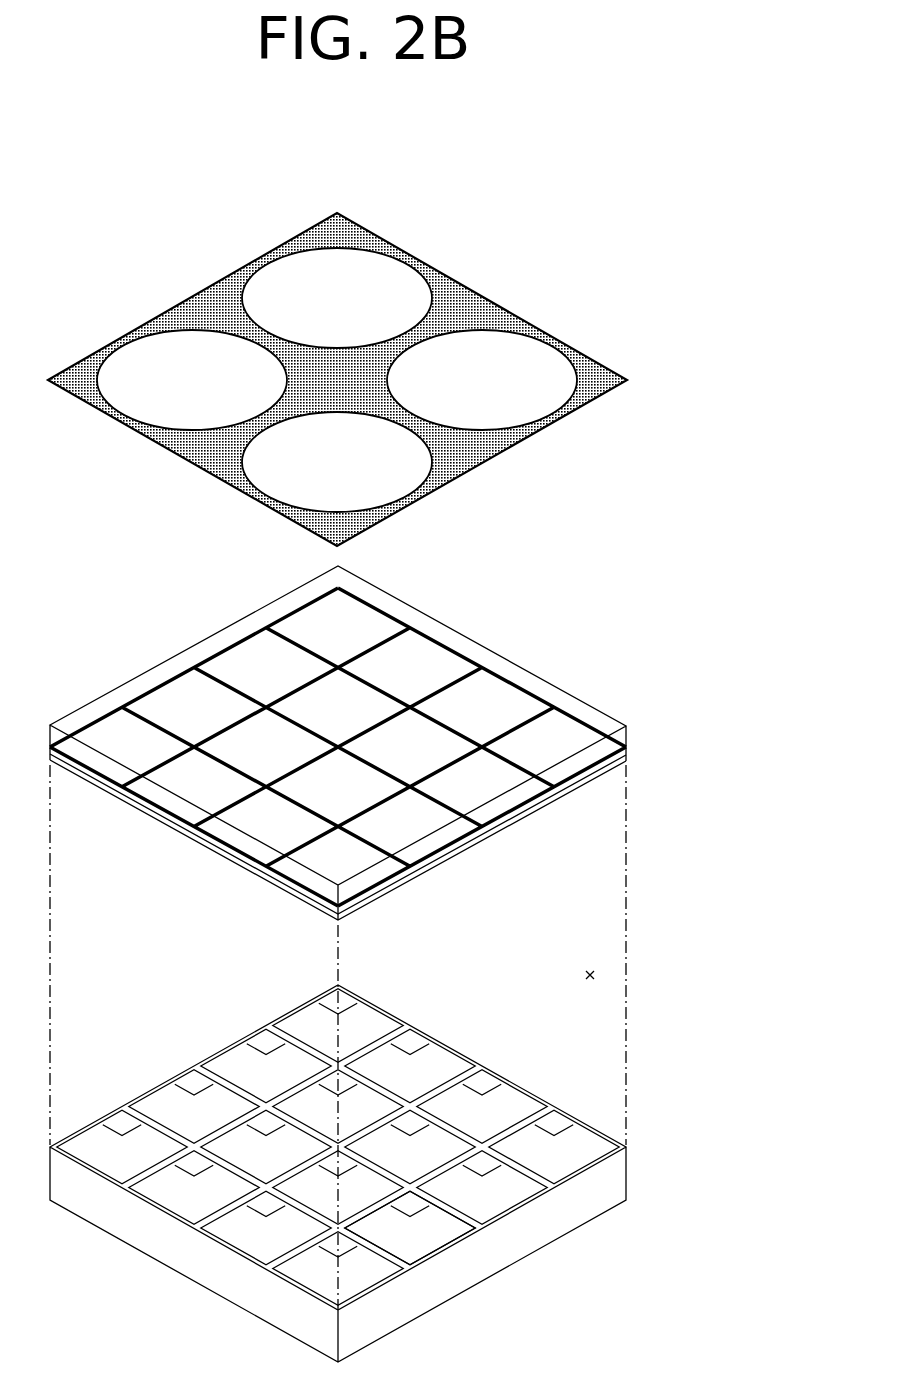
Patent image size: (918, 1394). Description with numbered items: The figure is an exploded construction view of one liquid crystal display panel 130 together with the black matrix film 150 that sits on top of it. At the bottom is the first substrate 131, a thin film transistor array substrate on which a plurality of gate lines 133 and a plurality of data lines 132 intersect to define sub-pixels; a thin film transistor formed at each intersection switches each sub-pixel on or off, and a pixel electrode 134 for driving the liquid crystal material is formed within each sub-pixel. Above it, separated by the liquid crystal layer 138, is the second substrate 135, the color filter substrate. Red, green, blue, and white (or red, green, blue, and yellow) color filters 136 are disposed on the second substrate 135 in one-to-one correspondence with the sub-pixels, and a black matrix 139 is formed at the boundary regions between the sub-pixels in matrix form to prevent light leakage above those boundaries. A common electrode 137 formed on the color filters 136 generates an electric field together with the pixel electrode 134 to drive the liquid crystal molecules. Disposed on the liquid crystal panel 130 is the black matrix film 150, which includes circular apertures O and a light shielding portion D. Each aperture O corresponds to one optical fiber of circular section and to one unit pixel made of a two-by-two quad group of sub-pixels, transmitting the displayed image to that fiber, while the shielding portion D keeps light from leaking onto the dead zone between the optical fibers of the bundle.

The black matrix film 150 is at (357, 379).
The circular aperture O is at (532, 415).
The light shielding portion D is at (470, 450).
The display panel 130 is at (380, 743).
The second substrate 135 is at (628, 729).
The color filters 136 is at (628, 752).
The common electrode 137 is at (603, 775).
The liquid crystal layer 138 is at (605, 975).
The black matrix 139 is at (468, 745).
The first substrate 131 is at (360, 1173).
The data lines 132 is at (497, 1226).
The gate lines 133 is at (567, 1182).
The pixel electrode 134 is at (427, 1253).